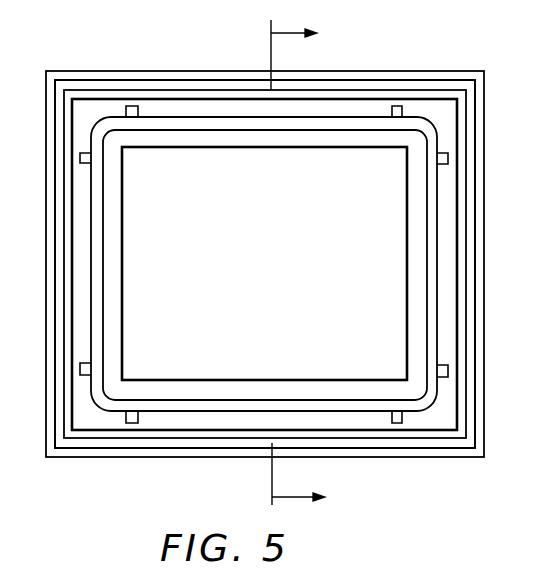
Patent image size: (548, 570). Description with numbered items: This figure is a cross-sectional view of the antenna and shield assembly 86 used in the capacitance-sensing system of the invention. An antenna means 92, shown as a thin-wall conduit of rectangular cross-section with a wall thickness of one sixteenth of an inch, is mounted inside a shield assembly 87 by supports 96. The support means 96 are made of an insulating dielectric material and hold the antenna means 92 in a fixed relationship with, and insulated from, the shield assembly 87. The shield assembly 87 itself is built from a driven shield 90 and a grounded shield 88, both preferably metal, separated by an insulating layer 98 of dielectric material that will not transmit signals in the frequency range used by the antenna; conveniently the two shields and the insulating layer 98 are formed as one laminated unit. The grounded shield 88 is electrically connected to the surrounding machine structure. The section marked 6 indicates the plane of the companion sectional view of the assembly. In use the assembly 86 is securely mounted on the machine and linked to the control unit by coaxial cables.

The antenna and shield assembly 86 is at (157, 461).
The shield assembly 87 is at (152, 70).
The grounded shield 88 is at (197, 77).
The insulating layer 98 is at (353, 86).
The driven shield 90 is at (427, 95).
The antenna means 92 is at (285, 126).
The support means 96 is at (132, 106).
The section line 6- 6 is at (289, 266).